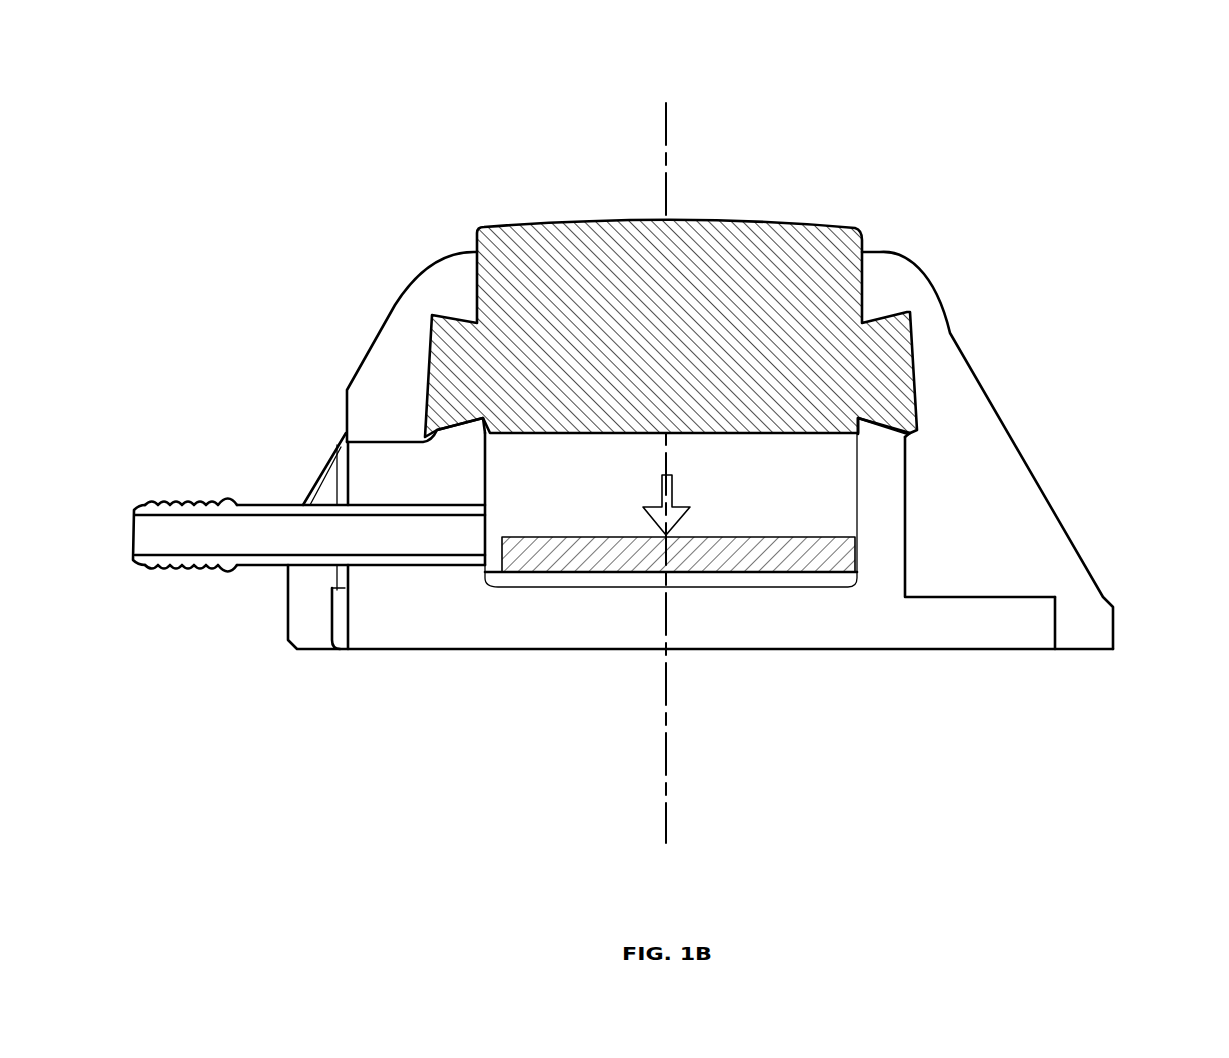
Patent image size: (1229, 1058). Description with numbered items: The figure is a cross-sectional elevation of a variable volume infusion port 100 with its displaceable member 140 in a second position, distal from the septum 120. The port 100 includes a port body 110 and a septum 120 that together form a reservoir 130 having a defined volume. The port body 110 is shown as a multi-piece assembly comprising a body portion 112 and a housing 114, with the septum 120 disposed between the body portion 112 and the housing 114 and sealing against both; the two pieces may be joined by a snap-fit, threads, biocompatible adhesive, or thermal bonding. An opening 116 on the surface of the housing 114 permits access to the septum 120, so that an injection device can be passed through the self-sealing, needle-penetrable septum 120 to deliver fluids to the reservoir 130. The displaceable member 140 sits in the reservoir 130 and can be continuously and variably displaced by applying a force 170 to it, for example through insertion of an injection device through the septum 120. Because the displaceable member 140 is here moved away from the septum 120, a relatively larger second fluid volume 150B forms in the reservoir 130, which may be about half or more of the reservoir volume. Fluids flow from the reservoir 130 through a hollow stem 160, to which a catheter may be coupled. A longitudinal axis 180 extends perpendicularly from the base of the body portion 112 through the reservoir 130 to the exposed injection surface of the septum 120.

The variable volume infusion port 100 is at (1130, 76).
The port body 110 is at (900, 249).
The body portion 112 is at (884, 632).
The housing 114 is at (987, 522).
The opening 116 is at (474, 265).
The septum 120 is at (671, 328).
The reservoir 130 is at (860, 496).
The displaceable member 140 is at (678, 554).
The second fluid volume 150B is at (828, 441).
The hollow stem 160 is at (238, 567).
The force 170 is at (677, 492).
The longitudinal axis 180 is at (666, 735).